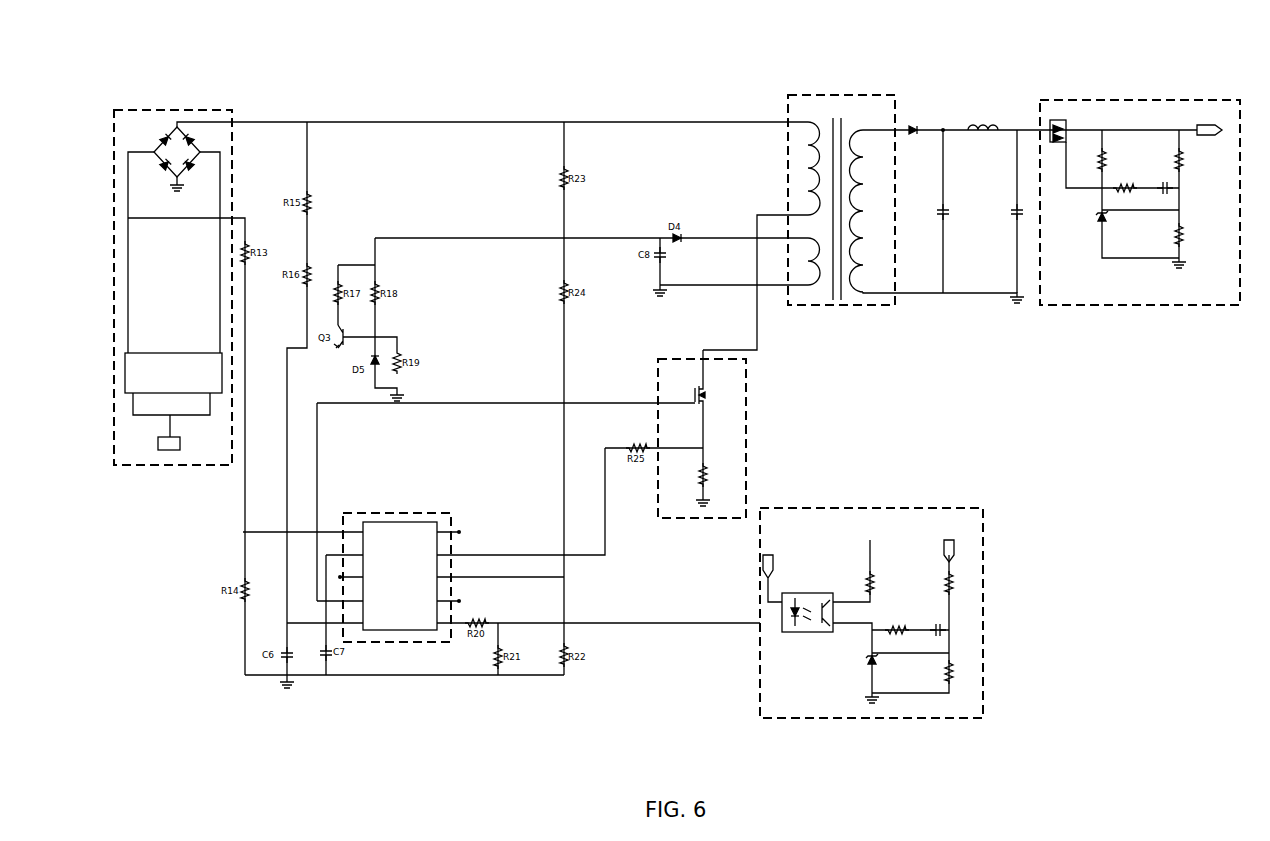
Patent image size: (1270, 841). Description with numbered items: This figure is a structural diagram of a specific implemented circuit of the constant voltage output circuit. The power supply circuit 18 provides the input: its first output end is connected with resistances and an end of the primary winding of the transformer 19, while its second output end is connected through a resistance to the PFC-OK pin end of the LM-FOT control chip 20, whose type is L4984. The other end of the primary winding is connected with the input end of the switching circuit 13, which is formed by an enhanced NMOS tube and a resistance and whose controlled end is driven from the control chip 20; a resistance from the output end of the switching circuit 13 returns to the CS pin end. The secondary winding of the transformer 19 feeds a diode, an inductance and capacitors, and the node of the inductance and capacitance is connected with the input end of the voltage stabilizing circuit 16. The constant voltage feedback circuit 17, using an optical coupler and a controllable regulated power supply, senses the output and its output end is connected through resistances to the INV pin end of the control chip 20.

The power supply circuit 18 is at (165, 110).
The transformer 19 is at (800, 95).
The voltage stabilizing circuit 16 is at (1110, 100).
The switching circuit 13 is at (748, 380).
The constant voltage feedback circuit 17 is at (830, 508).
The LM-FOT control chip 20 is at (395, 513).